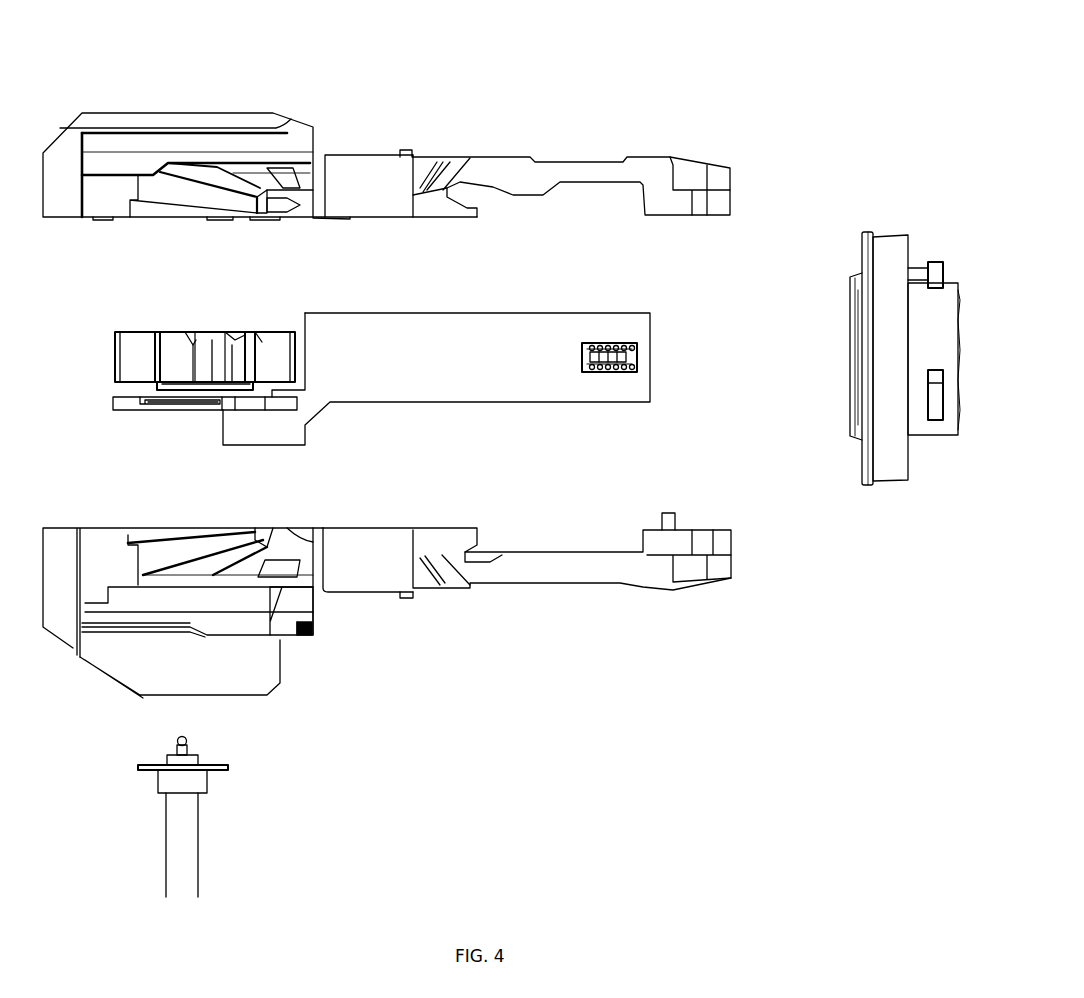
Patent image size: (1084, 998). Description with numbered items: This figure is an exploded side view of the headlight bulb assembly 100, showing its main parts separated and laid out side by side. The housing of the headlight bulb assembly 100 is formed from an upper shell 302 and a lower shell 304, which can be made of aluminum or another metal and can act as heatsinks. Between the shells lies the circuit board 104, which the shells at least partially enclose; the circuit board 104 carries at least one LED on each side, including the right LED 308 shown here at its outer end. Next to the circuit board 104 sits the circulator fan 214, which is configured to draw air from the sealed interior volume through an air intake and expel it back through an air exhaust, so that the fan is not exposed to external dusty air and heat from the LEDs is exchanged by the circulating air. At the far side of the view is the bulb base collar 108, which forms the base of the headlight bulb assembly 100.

The headlight bulb assembly 100 is at (504, 54).
The upper shell 302 is at (670, 157).
The lower shell 304 is at (643, 587).
The circuit board 104 is at (435, 313).
The right LED 308 is at (637, 355).
The circulator fan 214 is at (160, 335).
The bulb base collar 108 is at (893, 235).